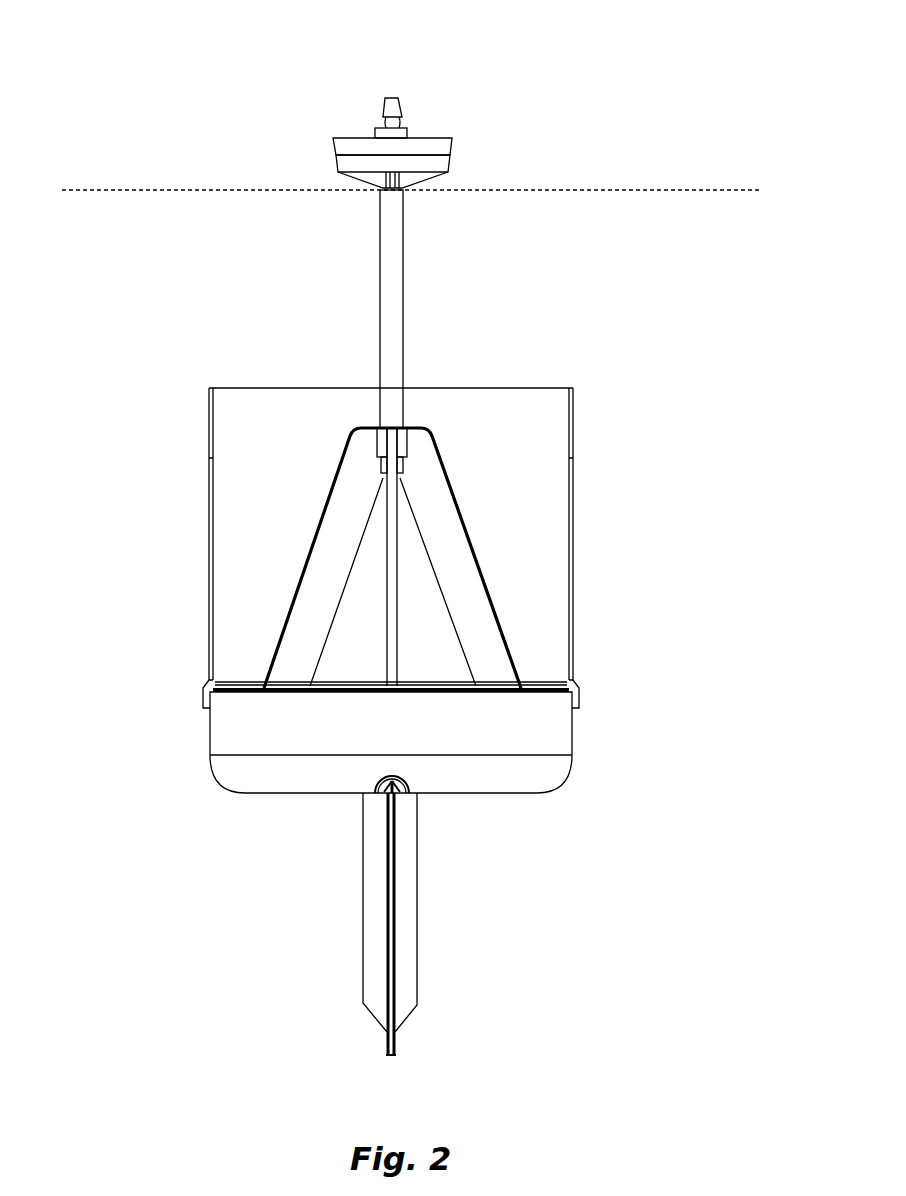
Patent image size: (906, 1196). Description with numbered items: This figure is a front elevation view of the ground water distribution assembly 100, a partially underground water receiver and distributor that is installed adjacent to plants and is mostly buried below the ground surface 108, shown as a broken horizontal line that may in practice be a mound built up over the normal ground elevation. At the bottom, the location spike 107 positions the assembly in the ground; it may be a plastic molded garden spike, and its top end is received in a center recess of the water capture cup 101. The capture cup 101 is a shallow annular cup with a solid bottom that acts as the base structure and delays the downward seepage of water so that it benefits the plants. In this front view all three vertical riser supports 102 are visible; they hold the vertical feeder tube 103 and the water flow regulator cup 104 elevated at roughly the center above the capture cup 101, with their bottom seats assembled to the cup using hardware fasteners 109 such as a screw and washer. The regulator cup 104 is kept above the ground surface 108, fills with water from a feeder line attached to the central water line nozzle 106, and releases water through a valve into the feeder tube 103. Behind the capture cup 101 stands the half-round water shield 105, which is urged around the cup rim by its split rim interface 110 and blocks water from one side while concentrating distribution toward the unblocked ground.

The ground water distribution assembly 100 is at (540, 126).
The water capture cup 101 is at (210, 746).
The vertical riser supports 102 is at (325, 632).
The vertical feeder tube 103 is at (403, 291).
The water flow regulator cup 104 is at (338, 162).
The half-round water shield 105 is at (573, 492).
The water line nozzle 106 is at (395, 95).
The location spike 107 is at (363, 975).
The ground surface 108 is at (182, 190).
The hardware fasteners 109 is at (403, 783).
The split rim interface 110 is at (203, 694).